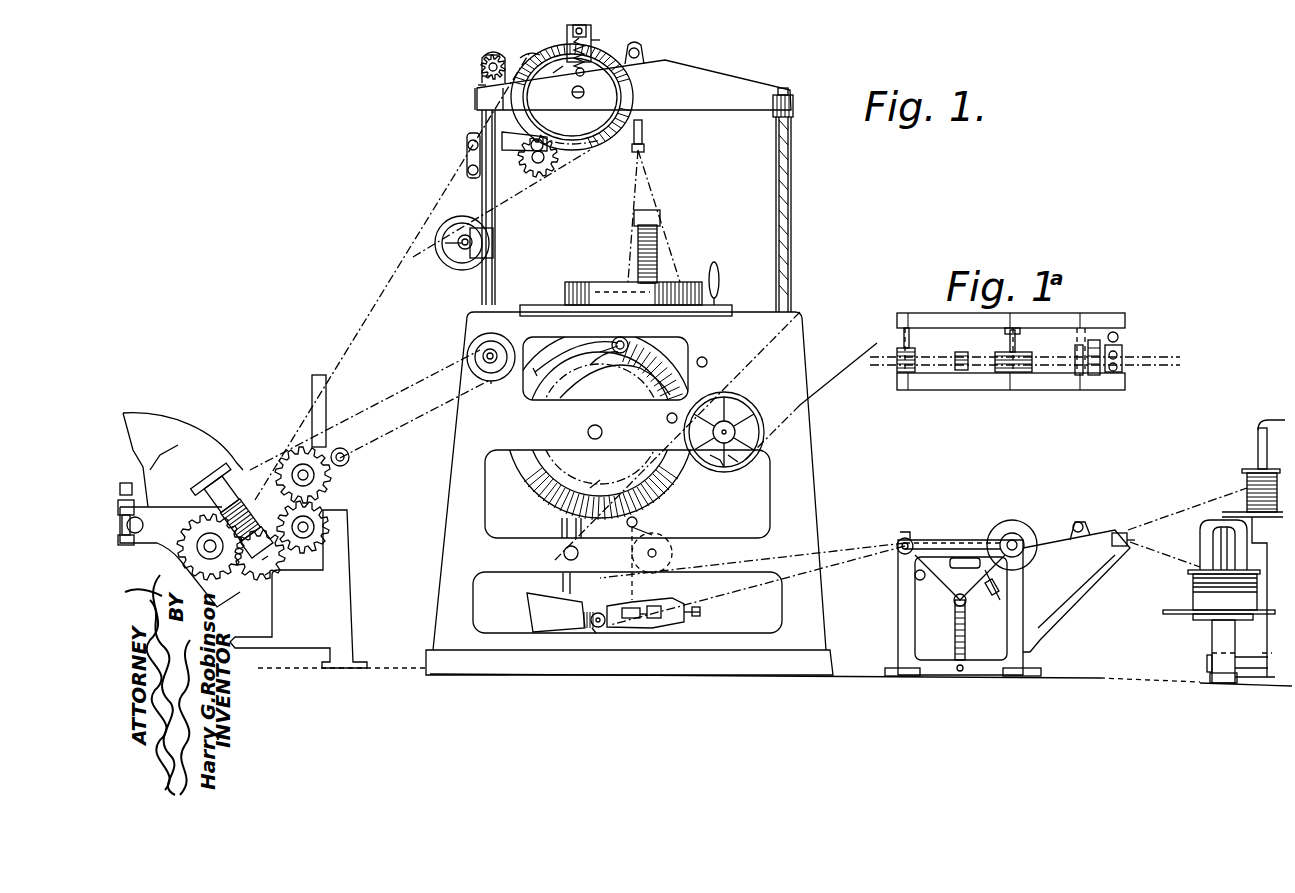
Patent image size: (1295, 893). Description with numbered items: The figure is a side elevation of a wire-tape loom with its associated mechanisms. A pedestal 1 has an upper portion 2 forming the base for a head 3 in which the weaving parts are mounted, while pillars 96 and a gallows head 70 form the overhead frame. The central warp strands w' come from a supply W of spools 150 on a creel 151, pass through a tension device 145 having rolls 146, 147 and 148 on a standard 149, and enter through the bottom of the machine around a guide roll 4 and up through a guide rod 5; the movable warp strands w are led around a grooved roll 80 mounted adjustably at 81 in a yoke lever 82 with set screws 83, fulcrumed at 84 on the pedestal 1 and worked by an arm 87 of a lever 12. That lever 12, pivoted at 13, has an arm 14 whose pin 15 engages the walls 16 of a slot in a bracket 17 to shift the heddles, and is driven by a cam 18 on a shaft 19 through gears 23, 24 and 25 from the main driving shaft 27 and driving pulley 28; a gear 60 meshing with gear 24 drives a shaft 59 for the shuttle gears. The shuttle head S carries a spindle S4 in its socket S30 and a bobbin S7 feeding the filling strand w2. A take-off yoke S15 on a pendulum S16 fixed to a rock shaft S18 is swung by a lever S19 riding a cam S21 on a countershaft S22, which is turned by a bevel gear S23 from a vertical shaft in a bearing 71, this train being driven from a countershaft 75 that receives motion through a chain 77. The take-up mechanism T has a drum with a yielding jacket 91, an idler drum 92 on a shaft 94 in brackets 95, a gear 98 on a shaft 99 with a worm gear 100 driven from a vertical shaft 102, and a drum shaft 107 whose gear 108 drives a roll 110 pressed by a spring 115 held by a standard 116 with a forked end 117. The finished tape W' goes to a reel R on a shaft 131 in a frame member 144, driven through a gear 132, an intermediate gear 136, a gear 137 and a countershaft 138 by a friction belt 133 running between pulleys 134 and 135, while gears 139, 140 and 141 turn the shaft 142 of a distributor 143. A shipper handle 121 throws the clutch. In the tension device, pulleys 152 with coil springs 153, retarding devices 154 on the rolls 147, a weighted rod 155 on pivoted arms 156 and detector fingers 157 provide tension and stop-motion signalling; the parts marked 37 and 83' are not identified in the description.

In FIG. 1, the pedestal 1 is at (760, 674).
In FIG. 1, the upper portion of pedestal 2 is at (790, 318).
In FIG. 1, the head 3 is at (732, 310).
In FIG. 1, the guide roll 4 is at (670, 540).
In FIG. 1, the guide rod 5 is at (640, 520).
In FIG. 1, the lever 12 is at (562, 532).
In FIG. 1, the lever pivot 13 is at (564, 553).
In FIG. 1, the arm 14 is at (612, 352).
In FIG. 1, the pin 15 is at (624, 350).
In FIG. 1, the slot walls 16 is at (612, 344).
In FIG. 1, the depending bracket 17 is at (596, 350).
In FIG. 1, the cam 18 is at (540, 492).
In FIG. 1, the shaft 19 is at (588, 432).
In FIG. 1, the gear 23 is at (590, 488).
In FIG. 1, the gear 24 is at (667, 420).
In FIG. 1, the gear 25 is at (738, 462).
In FIG. 1, the main driving shaft 27 is at (720, 450).
In FIG. 1, the driving pulley 28 is at (745, 410).
In FIG. 1, the cross bar 37 is at (565, 290).
In FIG. 1, the shaft 59 is at (702, 357).
In FIG. 1, the gear 60 is at (628, 341).
In FIG. 1, the gallows head 70 is at (745, 110).
In FIG. 1, the bearing 71 is at (475, 100).
In FIG. 1, the countershaft 75 is at (480, 350).
In FIG. 1, the chain 77 is at (566, 344).
In FIG. 1, the grooved roll 80 is at (655, 600).
In FIG. 1, the adjustable mounting 81 is at (650, 624).
In FIG. 1, the yoke lever 82 is at (600, 628).
In FIG. 1, the set screws 83 is at (566, 633).
In FIG. 1, the pin 83' is at (681, 640).
In FIG. 1, the fulcrum 84 is at (592, 630).
In FIG. 1, the arm 87 is at (530, 596).
In FIG. 1, the jacket 91 is at (603, 123).
In FIG. 1, the idler drum 92 is at (470, 258).
In FIG. 1, the shaft 94 is at (463, 242).
In FIG. 1, the brackets 95 is at (496, 247).
In FIG. 1, the pillars 96 is at (482, 120).
In FIG. 1, the gear 98 is at (537, 153).
In FIG. 1, the shaft 99 is at (555, 158).
In FIG. 1, the worm gear 100 is at (580, 150).
In FIG. 1, the vertical shaft 102 is at (494, 252).
In FIG. 1, the drum shaft 107 is at (467, 140).
In FIG. 1, the gear 108 is at (553, 73).
In FIG. 1, the roll 110 is at (591, 36).
In FIG. 1, the spring 115 is at (572, 92).
In FIG. 1, the standard 116 is at (567, 30).
In FIG. 1, the forked upper end 117 is at (585, 73).
In FIG. 1, the shipper handle 121 is at (720, 282).
In FIG. 1, the reel shaft 131 is at (142, 518).
In FIG. 1, the gear 132 is at (178, 460).
In FIG. 1, the friction belt 133 is at (440, 416).
In FIG. 1, the pulley 134 is at (496, 382).
In FIG. 1, the pulley 135 is at (235, 468).
In FIG. 1, the intermediate gear 136 is at (262, 560).
In FIG. 1, the gear 137 is at (265, 575).
In FIG. 1, the countershaft 138 is at (200, 538).
In FIG. 1, the intermediate gear 139 is at (272, 570).
In FIG. 1, the intermediate gear 140 is at (330, 537).
In FIG. 1, the intermediate gear 141 is at (333, 483).
In FIG. 1, the distributor shaft 142 is at (349, 462).
In FIG. 1, the distributor 143 is at (326, 392).
In FIG. 1, the frame member 144 is at (126, 483).
In FIG. 1, the tension device 145 is at (348, 598).
In FIG. 1A, the tension device 145 is at (1112, 320).
In FIG. 1, the rolls 146 is at (1125, 533).
In FIG. 1A, the rolls 146 is at (1120, 337).
In FIG. 1, the direction rolls 147 is at (1015, 532).
In FIG. 1A, the direction rolls 147 is at (1015, 372).
In FIG. 1, the rolls 148 is at (900, 552).
In FIG. 1A, the rolls 148 is at (897, 365).
In FIG. 1, the standard 149 is at (992, 665).
In FIG. 1, the spools 150 is at (1250, 470).
In FIG. 1, the creel 151 is at (1250, 667).
In FIG. 1, the pulleys 152 is at (955, 602).
In FIG. 1A, the pulleys 152 is at (962, 372).
In FIG. 1, the coil spring 153 is at (995, 600).
In FIG. 1, the retarding devices 154 is at (1020, 585).
In FIG. 1, the weighted rod 155 is at (975, 562).
In FIG. 1, the pivoted arms 156 is at (975, 558).
In FIG. 1, the fingers 157 is at (1082, 522).
In FIG. 1A, the fingers 157 is at (1090, 375).
In FIG. 1, the reel R is at (195, 435).
In FIG. 1, the take-up mechanism T is at (668, 86).
In FIG. 1, the shuttle head S is at (640, 284).
In FIG. 1, the spindle S4 is at (634, 216).
In FIG. 1, the bobbin S7 is at (638, 248).
In FIG. 1, the take-off member S15 is at (644, 153).
In FIG. 1, the pendulum S16 is at (642, 130).
In FIG. 1, the rock shaft S18 is at (644, 50).
In FIG. 1, the lever S19 is at (525, 54).
In FIG. 1, the cam S21 is at (482, 65).
In FIG. 1, the countershaft S22 is at (482, 76).
In FIG. 1, the bevel gear S23 is at (478, 86).
In FIG. 1, the socket S30 is at (492, 57).
In FIG. 1, the supply W is at (1187, 511).
In FIG. 1, the completed product W' is at (392, 276).
In FIG. 1, the movable warp strands w is at (748, 432).
In FIG. 1A, the movable warp strands w is at (1037, 347).
In FIG. 1, the central warp strands w' is at (746, 415).
In FIG. 1A, the central warp strands w' is at (1038, 375).
In FIG. 1, the filling strand w2 is at (632, 205).